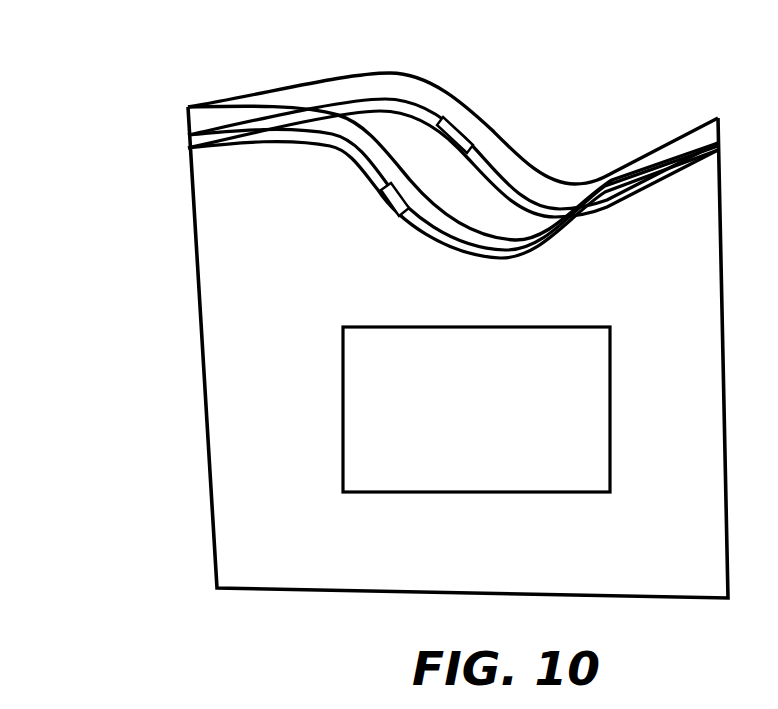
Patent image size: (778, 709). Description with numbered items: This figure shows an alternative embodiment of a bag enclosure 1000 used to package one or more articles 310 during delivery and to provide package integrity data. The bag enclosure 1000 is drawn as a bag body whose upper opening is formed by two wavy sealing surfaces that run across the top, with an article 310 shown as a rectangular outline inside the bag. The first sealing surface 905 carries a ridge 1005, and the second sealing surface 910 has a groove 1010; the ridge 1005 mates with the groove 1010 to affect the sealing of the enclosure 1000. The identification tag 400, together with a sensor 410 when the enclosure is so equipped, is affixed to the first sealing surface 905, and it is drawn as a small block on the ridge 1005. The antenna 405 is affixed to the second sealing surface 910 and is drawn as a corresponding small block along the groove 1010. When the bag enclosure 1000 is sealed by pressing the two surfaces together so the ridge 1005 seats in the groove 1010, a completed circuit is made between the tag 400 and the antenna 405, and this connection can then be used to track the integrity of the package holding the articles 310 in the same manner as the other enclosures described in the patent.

The bag enclosure 1000 is at (120, 113).
The article 310 is at (343, 410).
The second sealing surface 910 is at (453, 124).
The groove 1010 is at (453, 124).
The antenna 405 is at (467, 122).
The first sealing surface 905 is at (453, 189).
The ridge 1005 is at (453, 200).
The identification tag 400 is at (358, 218).
The sensor 410 is at (393, 214).